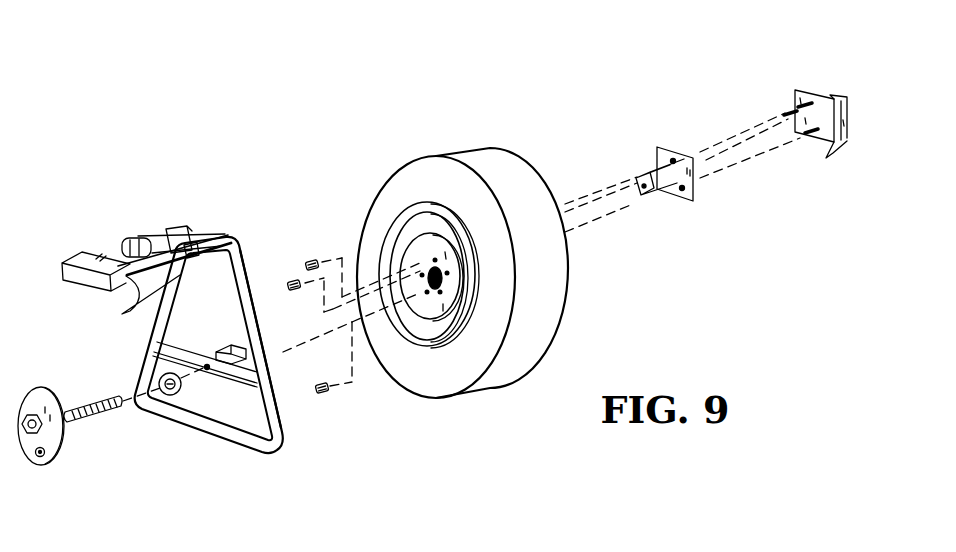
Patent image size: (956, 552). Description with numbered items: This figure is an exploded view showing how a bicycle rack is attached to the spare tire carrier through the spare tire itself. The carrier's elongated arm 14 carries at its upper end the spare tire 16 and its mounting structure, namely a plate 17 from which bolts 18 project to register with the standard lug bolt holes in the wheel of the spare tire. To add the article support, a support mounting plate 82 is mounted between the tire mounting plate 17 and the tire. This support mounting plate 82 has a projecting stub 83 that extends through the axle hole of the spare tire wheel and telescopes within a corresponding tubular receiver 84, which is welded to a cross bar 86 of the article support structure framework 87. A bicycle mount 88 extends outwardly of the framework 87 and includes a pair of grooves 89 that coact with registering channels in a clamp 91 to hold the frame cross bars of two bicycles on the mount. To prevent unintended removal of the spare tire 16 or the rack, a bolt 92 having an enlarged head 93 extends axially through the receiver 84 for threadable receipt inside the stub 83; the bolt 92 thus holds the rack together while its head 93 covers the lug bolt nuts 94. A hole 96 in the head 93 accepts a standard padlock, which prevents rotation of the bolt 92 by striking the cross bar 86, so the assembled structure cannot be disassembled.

The elongated arm 14 is at (848, 126).
The spare tire 16 is at (478, 158).
The plate 17 is at (796, 90).
The bolts 18 is at (814, 131).
The support mounting plate 82 is at (657, 147).
The projecting stub 83 is at (661, 198).
The tubular receiver 84 is at (219, 346).
The cross bar 86 is at (243, 386).
The article support structure framework 87 is at (240, 277).
The bicycle mount 88 is at (230, 238).
The grooves 89 is at (135, 295).
The clamp 91 is at (80, 252).
The bolt 92 is at (88, 400).
The enlarged head 93 is at (36, 396).
The lug bolt nuts 94 is at (314, 259).
The hole 96 is at (40, 457).